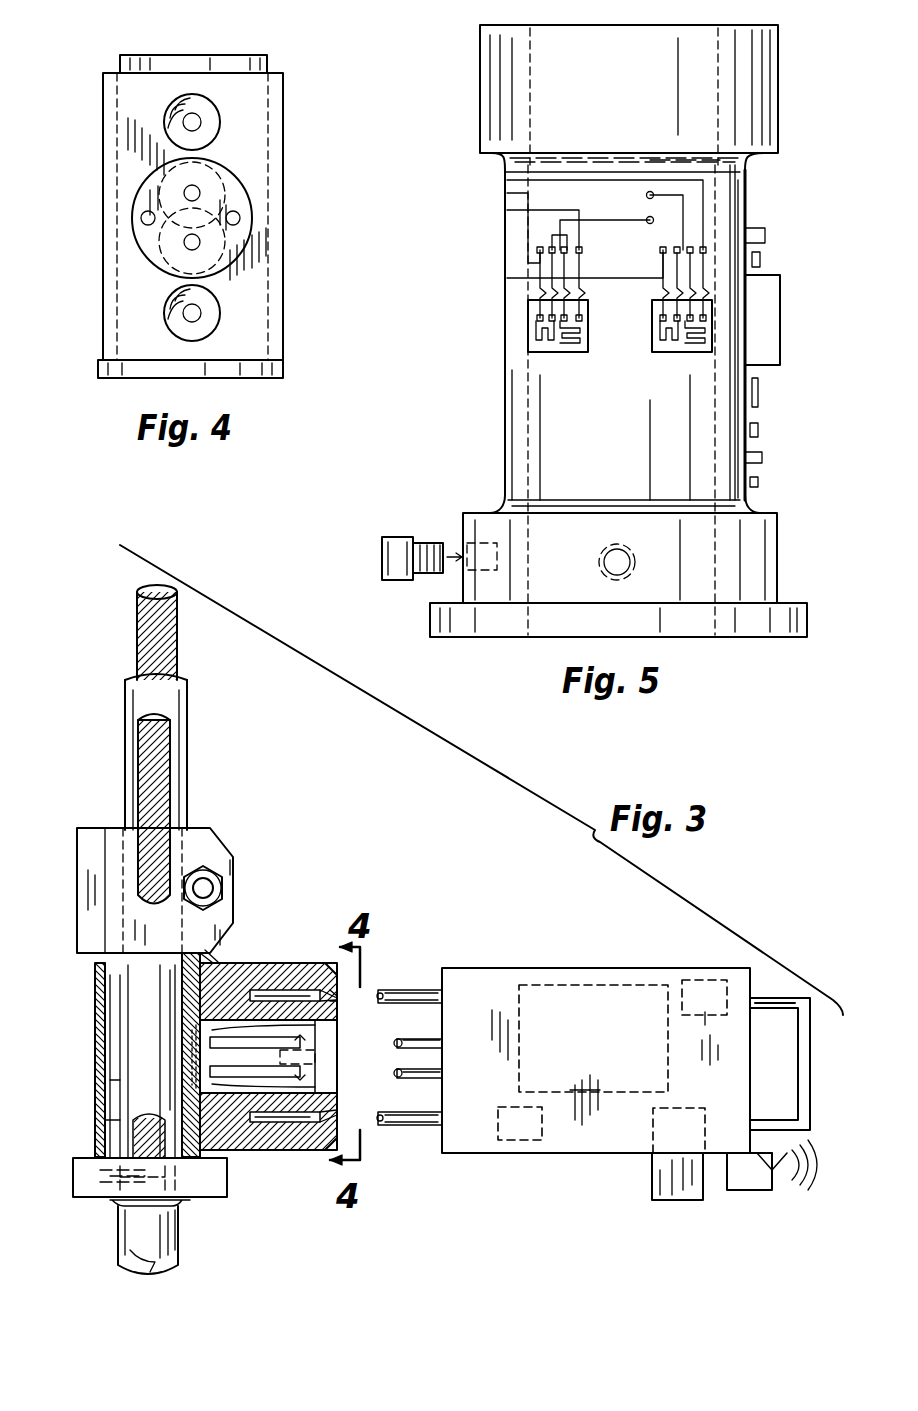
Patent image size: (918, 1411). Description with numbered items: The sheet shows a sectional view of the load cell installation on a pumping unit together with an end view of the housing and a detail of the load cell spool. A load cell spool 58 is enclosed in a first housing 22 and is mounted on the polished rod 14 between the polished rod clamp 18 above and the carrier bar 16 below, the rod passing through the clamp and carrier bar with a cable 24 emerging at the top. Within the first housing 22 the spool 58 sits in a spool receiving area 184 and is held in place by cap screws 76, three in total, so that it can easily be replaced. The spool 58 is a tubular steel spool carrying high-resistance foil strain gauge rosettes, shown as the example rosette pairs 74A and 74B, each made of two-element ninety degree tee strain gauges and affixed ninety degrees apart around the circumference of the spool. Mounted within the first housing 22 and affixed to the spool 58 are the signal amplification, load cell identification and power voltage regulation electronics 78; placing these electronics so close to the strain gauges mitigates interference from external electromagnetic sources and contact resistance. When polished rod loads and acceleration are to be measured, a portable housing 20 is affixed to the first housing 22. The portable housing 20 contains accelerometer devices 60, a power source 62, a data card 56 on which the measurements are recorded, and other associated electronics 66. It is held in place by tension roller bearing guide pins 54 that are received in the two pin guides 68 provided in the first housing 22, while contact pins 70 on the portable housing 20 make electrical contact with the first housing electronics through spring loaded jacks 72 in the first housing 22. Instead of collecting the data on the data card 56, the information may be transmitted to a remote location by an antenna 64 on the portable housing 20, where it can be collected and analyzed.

In FIG. 3, the polished rod 14 is at (172, 1235).
In FIG. 3, the carrier bar 16 is at (82, 1176).
In FIG. 3, the polished rod clamp 18 is at (205, 841).
In FIG. 3, the portable housing 20 is at (605, 968).
In FIG. 4, the first housing 22 is at (125, 121).
In FIG. 3, the first housing 22 is at (315, 966).
In FIG. 3, the cable 24 is at (178, 649).
In FIG. 3, the tension roller bearing guide pins 54 is at (412, 990).
In FIG. 3, the data card 56 is at (665, 1191).
In FIG. 5, the load cell spool 58 is at (502, 104).
In FIG. 3, the load cell spool 58 is at (95, 986).
In FIG. 3, the accelerometer devices 60 is at (520, 1142).
In FIG. 3, the power source 62 is at (688, 982).
In FIG. 3, the antenna 64 is at (780, 1166).
In FIG. 3, the associated electronics 66 is at (545, 985).
In FIG. 3, the pin guides 68 is at (320, 998).
In FIG. 3, the contact pins 70 is at (410, 1084).
In FIG. 3, the spring loaded jacks 72 is at (185, 1079).
In FIG. 5, the strain gauge rosette pair 74A is at (690, 356).
In FIG. 5, the strain gauge rosette pair 74B is at (528, 336).
In FIG. 5, the cap screws 76 is at (398, 537).
In FIG. 5, the signal amplification, load cell identification and power voltage regulation elec 78 is at (748, 274).
In FIG. 3, the spool receiving area 184 is at (210, 961).